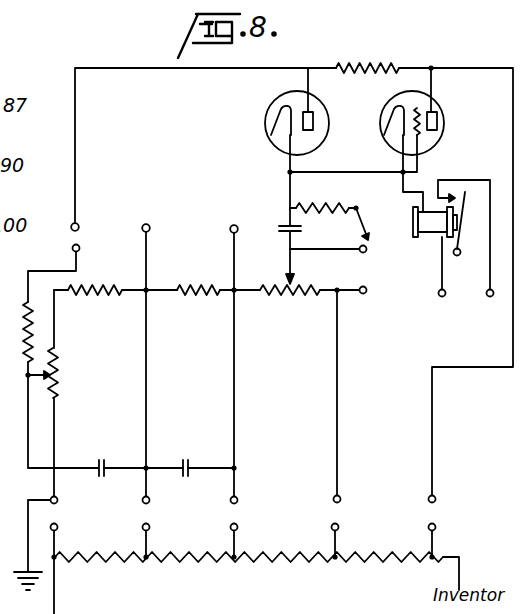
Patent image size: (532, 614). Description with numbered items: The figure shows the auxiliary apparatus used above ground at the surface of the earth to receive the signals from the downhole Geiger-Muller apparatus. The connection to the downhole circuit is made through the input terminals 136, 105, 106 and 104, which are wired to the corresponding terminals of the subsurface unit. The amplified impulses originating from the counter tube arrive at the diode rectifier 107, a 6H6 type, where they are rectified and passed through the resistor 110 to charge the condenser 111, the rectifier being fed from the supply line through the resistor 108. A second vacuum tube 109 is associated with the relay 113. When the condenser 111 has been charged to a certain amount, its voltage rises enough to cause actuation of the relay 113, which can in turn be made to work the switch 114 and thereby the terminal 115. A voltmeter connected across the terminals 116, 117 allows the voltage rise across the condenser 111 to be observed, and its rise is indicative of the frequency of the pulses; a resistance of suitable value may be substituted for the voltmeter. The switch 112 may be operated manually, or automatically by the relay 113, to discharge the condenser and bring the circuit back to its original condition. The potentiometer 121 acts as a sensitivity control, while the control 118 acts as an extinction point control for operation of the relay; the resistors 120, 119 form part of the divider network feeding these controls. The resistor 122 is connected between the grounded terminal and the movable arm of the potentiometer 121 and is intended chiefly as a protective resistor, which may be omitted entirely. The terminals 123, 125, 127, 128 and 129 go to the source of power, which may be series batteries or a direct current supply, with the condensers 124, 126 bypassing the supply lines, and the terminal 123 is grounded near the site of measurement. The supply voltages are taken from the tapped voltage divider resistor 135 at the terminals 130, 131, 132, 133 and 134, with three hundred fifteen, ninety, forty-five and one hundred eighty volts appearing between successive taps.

The terminal 104 is at (80, 222).
The terminal 105 is at (149, 224).
The terminal 106 is at (232, 225).
The diode rectifier 107 is at (264, 120).
The resistor 108 is at (367, 55).
The vacuum tube 109 is at (470, 109).
The resistor 110 is at (338, 205).
The condenser 111 is at (310, 226).
The switch 112 is at (370, 254).
The relay 113 is at (413, 220).
The switch 114 is at (465, 190).
The terminal 115 is at (488, 300).
The terminal 116 is at (438, 300).
The terminal 117 is at (363, 296).
The extinction point control 118 is at (292, 303).
The resistor 119 is at (200, 300).
The resistor 120 is at (110, 278).
The potentiometer 121 is at (66, 378).
The resistor 122 is at (32, 324).
The terminal 123 is at (59, 500).
The condenser 124 is at (112, 450).
The terminal 125 is at (151, 500).
The condenser 126 is at (194, 452).
The terminal 127 is at (240, 497).
The terminal 128 is at (345, 488).
The terminal 129 is at (437, 496).
The terminal 130 is at (59, 527).
The terminal 131 is at (151, 527).
The terminal 132 is at (239, 527).
The terminal 133 is at (340, 527).
The terminal 134 is at (437, 527).
The voltage divider resistor 135 is at (249, 576).
The terminal 136 is at (72, 249).